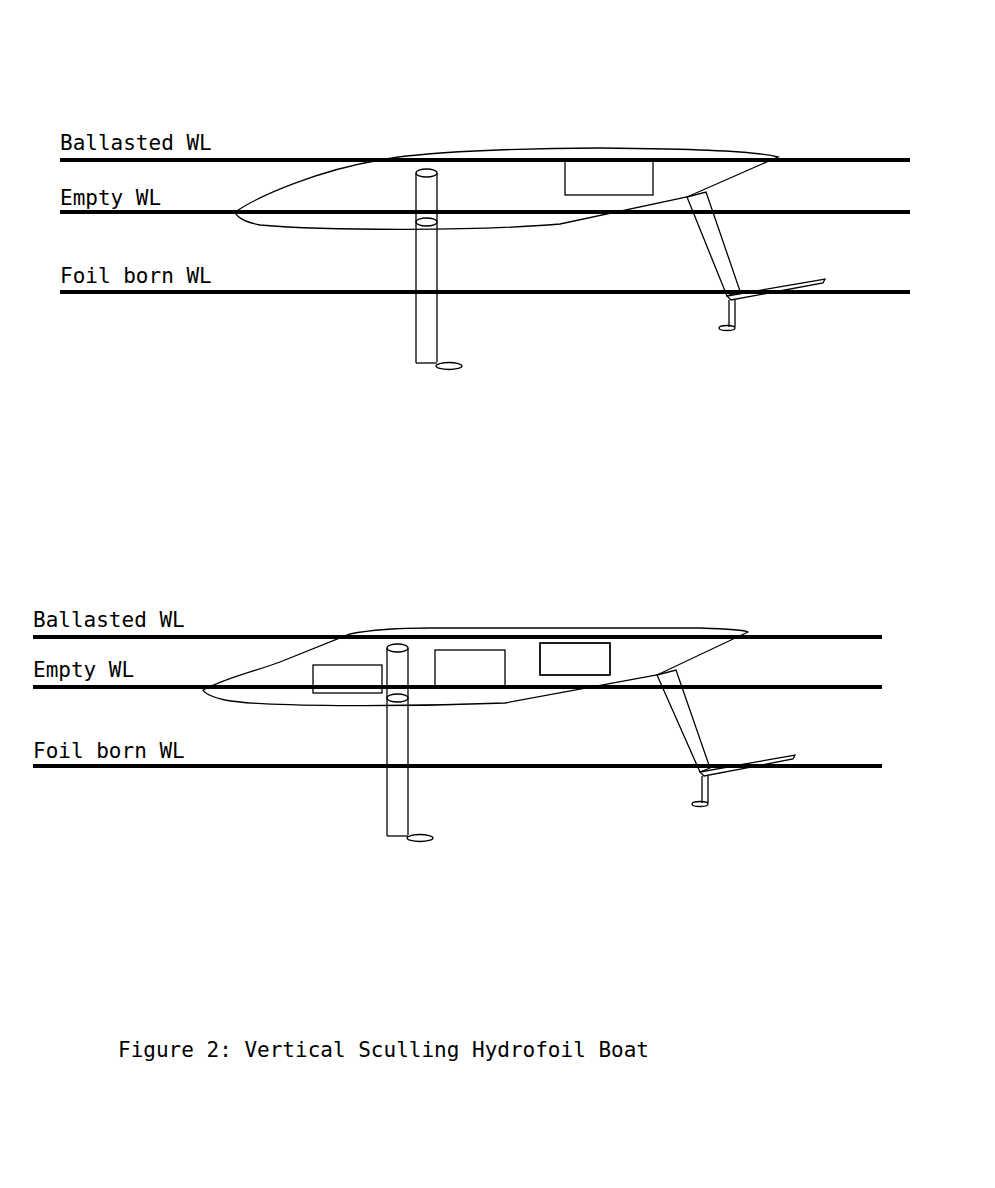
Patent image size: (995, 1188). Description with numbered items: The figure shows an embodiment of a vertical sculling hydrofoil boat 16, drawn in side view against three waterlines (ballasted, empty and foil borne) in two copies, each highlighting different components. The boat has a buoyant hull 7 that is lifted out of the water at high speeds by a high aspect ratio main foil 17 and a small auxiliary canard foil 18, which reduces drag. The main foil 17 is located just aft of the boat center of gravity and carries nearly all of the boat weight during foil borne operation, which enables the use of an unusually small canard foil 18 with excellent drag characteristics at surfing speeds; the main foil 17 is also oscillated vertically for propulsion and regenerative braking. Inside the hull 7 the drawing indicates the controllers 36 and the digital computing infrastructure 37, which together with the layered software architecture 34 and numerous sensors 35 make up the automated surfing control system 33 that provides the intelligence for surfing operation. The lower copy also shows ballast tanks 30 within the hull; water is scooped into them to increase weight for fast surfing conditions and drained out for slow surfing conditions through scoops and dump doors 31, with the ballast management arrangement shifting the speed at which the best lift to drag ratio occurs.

The vertical sculling hydrofoil boat 16 is at (397, 117).
The buoyant hull 7 is at (380, 156).
The controllers 36 is at (490, 113).
The digital computing infrastructure 37 is at (562, 150).
The main foil 17 is at (242, 823).
The canard foil 18 is at (756, 288).
The ballast tanks 30 is at (448, 624).
The surfing control system 33 is at (533, 645).
The layered software architecture 34 is at (610, 600).
The sensors 35 is at (765, 738).
The scoops and dump doors 31 is at (470, 713).